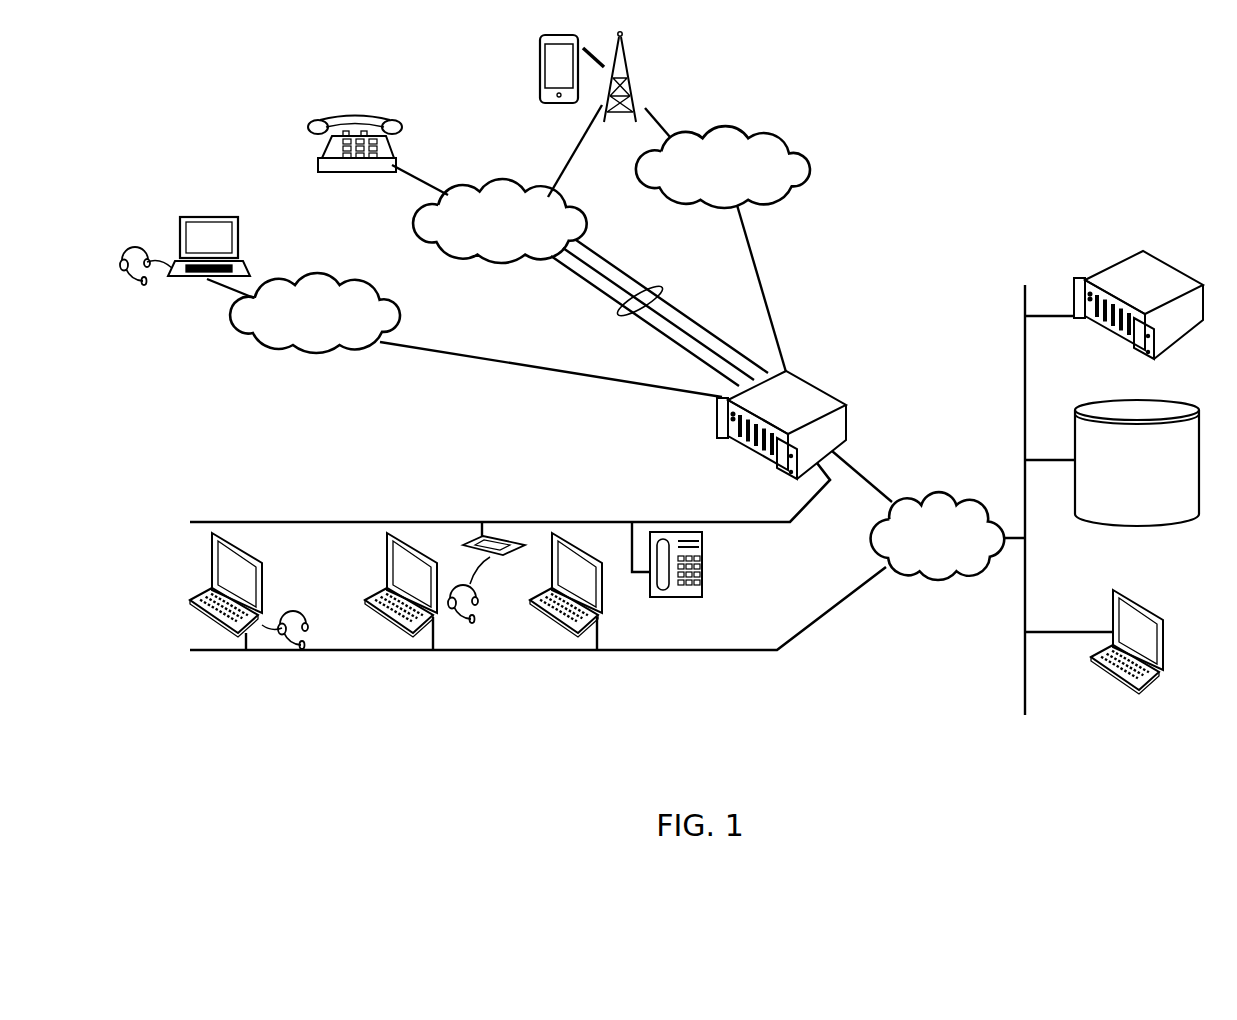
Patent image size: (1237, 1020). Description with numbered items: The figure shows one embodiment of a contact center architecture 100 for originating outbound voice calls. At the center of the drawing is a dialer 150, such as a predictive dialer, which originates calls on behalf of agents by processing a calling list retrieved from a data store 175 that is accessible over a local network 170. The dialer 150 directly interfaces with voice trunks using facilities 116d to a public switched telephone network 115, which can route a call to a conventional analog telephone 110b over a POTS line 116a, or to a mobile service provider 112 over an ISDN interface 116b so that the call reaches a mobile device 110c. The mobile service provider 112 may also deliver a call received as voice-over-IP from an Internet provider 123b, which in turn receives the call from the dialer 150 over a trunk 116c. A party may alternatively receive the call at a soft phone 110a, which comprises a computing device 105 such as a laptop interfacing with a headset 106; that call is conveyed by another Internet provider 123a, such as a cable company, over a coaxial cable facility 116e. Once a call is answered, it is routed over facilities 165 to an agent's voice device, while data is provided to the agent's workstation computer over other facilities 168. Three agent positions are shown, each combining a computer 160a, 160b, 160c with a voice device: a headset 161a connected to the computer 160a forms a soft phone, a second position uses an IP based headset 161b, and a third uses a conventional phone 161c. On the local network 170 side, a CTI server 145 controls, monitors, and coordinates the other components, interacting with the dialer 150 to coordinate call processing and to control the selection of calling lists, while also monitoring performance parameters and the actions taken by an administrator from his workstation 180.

The contact center architecture 100 is at (937, 161).
The computing device 105 is at (197, 212).
The headset 106 is at (127, 290).
The soft phone 110a is at (213, 204).
The conventional analog telephone 110b is at (400, 153).
The mobile device 110c is at (540, 72).
The mobile service provider 112 is at (632, 90).
The public switched telephone network 115 is at (515, 243).
The POTS line 116a is at (422, 187).
The ISDN interface 116b is at (580, 140).
The trunk 116c is at (762, 285).
The PSTN trunks 116d is at (617, 316).
The coaxial cable facility 116e is at (457, 352).
The Internet provider 123a is at (334, 333).
The Internet provider 123b is at (704, 186).
The CTI server 145 is at (1129, 308).
The dialer 150 is at (771, 424).
The computer 160a is at (265, 580).
The computer 160b is at (447, 575).
The computer 160c is at (607, 583).
The headset 161a is at (303, 623).
The IP based headset 161b is at (473, 592).
The conventional phone 161c is at (690, 597).
The facilities 165 is at (735, 518).
The facilities 168 is at (742, 657).
The local network 170 is at (880, 557).
The data store 175 is at (1123, 486).
The administrator workstation 180 is at (1151, 659).